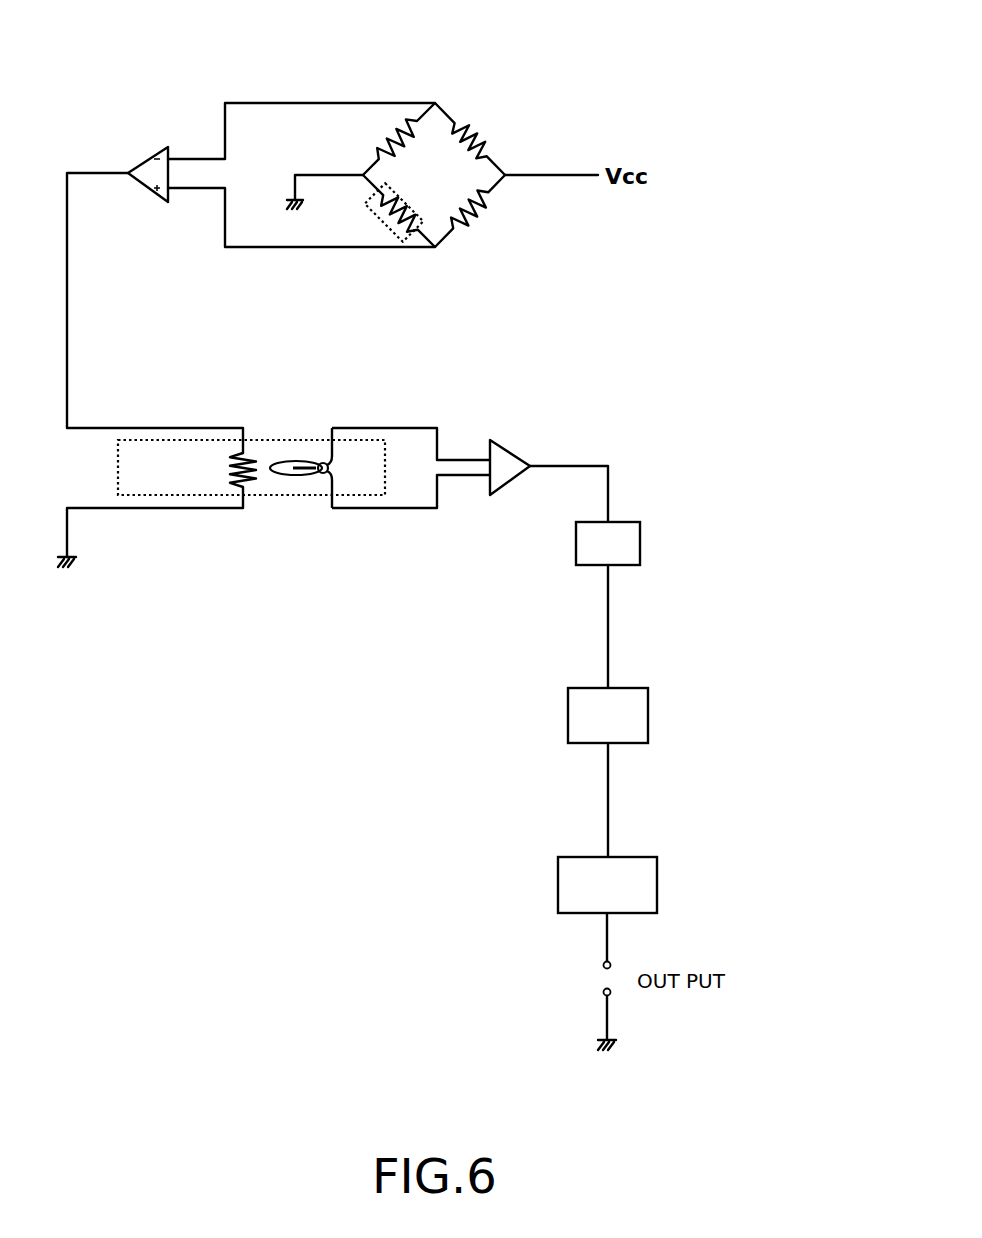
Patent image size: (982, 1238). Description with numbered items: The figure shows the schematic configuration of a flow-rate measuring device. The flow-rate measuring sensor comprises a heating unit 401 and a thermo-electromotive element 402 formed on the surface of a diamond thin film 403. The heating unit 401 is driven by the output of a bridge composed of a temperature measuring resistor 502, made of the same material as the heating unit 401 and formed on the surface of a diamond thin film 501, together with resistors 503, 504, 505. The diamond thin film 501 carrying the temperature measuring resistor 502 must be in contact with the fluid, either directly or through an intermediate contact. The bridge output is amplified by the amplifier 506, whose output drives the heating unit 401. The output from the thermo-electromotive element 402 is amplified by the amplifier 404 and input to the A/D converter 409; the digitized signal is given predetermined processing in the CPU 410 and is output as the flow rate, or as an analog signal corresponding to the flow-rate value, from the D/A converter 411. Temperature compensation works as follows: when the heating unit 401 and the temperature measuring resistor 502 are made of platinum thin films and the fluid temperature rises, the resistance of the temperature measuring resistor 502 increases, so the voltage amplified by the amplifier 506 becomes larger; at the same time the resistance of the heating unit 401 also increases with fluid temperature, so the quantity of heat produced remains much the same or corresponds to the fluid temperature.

The heating unit 401 is at (247, 450).
The thermo-electromotive element 402 is at (327, 464).
The diamond thin film 403 is at (278, 485).
The amplifier 404 is at (507, 465).
The A/D converter 409 is at (618, 528).
The CPU 410 is at (617, 700).
The D/A converter 411 is at (613, 867).
The diamond thin film 501 is at (405, 245).
The temperature measuring resistor 502 is at (386, 226).
The resistor 503 is at (383, 140).
The resistor 504 is at (480, 132).
The resistor 505 is at (470, 225).
The amplifier 506 is at (148, 178).